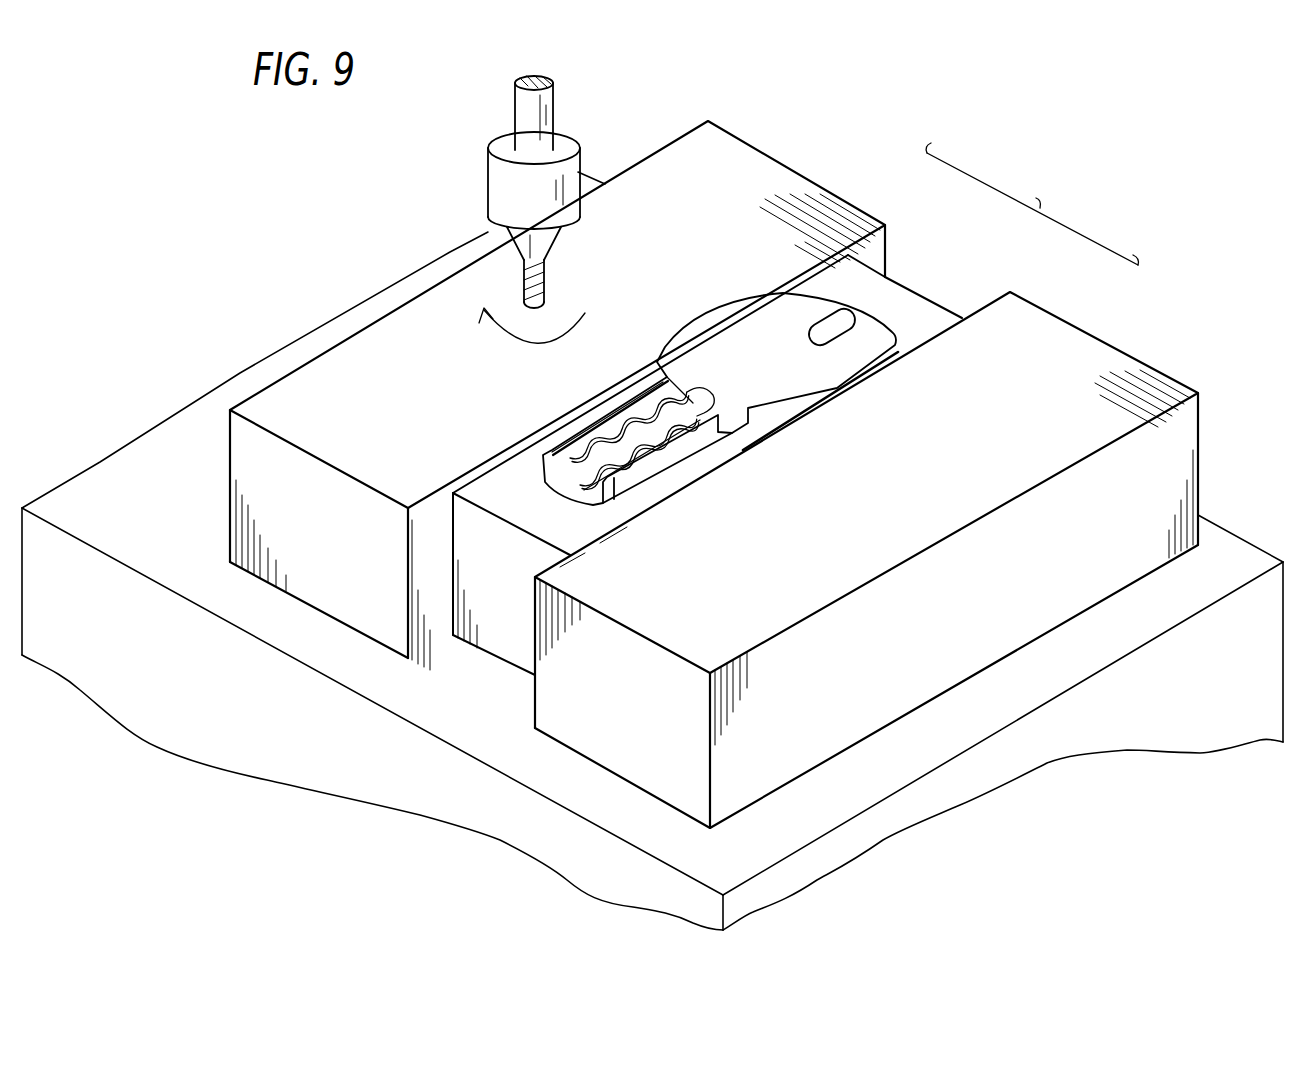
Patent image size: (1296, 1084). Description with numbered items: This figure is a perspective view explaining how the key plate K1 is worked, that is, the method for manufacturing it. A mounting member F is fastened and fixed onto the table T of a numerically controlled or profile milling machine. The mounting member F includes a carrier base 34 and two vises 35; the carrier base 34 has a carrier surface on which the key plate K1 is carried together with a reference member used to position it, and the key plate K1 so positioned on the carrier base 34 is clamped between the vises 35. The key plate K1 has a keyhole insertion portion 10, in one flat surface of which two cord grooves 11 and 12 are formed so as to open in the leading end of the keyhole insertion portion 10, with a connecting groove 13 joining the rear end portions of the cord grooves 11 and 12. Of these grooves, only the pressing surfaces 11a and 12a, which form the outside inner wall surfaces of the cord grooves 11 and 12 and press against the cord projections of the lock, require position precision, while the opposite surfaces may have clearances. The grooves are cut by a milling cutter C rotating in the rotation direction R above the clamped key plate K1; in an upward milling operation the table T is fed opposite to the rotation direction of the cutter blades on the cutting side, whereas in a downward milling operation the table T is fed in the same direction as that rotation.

The table T is at (167, 470).
The vises 35 is at (878, 214).
The carrier base 34 is at (917, 303).
The mounting member F is at (1032, 204).
The milling cutter C is at (497, 182).
The rotation direction R is at (531, 306).
The key plate K1 is at (709, 401).
The keyhole insertion portion 10 is at (618, 472).
The cord groove 11 is at (596, 447).
The pressing surface 11a is at (637, 408).
The cord groove 12 is at (640, 453).
The pressing surface 12a is at (675, 435).
The connecting groove 13 is at (693, 403).